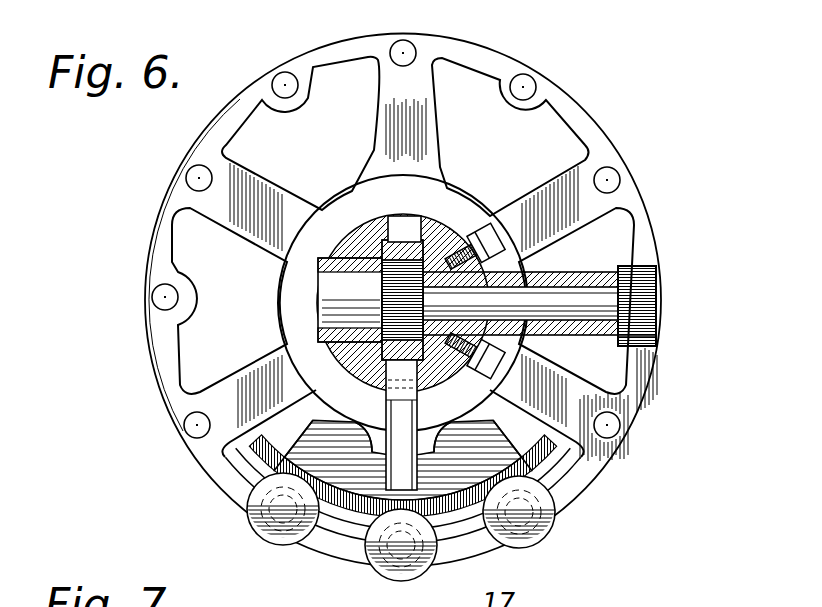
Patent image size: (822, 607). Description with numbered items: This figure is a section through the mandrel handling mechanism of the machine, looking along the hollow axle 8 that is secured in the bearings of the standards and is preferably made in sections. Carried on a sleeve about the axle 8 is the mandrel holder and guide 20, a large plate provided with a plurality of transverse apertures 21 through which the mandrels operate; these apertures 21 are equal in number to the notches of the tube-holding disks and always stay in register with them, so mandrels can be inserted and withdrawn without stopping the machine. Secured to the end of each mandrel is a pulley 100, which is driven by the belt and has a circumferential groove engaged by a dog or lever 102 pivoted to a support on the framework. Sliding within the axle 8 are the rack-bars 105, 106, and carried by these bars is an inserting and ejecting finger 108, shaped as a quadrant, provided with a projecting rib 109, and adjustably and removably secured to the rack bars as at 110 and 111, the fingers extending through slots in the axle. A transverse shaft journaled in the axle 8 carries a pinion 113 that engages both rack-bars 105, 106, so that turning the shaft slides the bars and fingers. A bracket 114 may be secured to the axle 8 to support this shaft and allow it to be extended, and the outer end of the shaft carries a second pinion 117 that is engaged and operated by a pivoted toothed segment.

The mandrel holder and guide 20 is at (485, 55).
The transverse apertures 21 is at (280, 77).
The hollow axle 8 is at (458, 218).
The pulley 100 is at (551, 538).
The dog or lever 102 is at (567, 300).
The rack-bar 105 is at (408, 216).
The rack-bar 106 is at (300, 394).
The inserting and ejecting finger 108 is at (488, 453).
The projecting rib 109 is at (552, 478).
The adjustable securing point 110 is at (384, 446).
The adjustable securing point 111 is at (418, 406).
The pinion 113 is at (392, 289).
The bracket 114 is at (619, 268).
The second pinion 117 is at (637, 338).